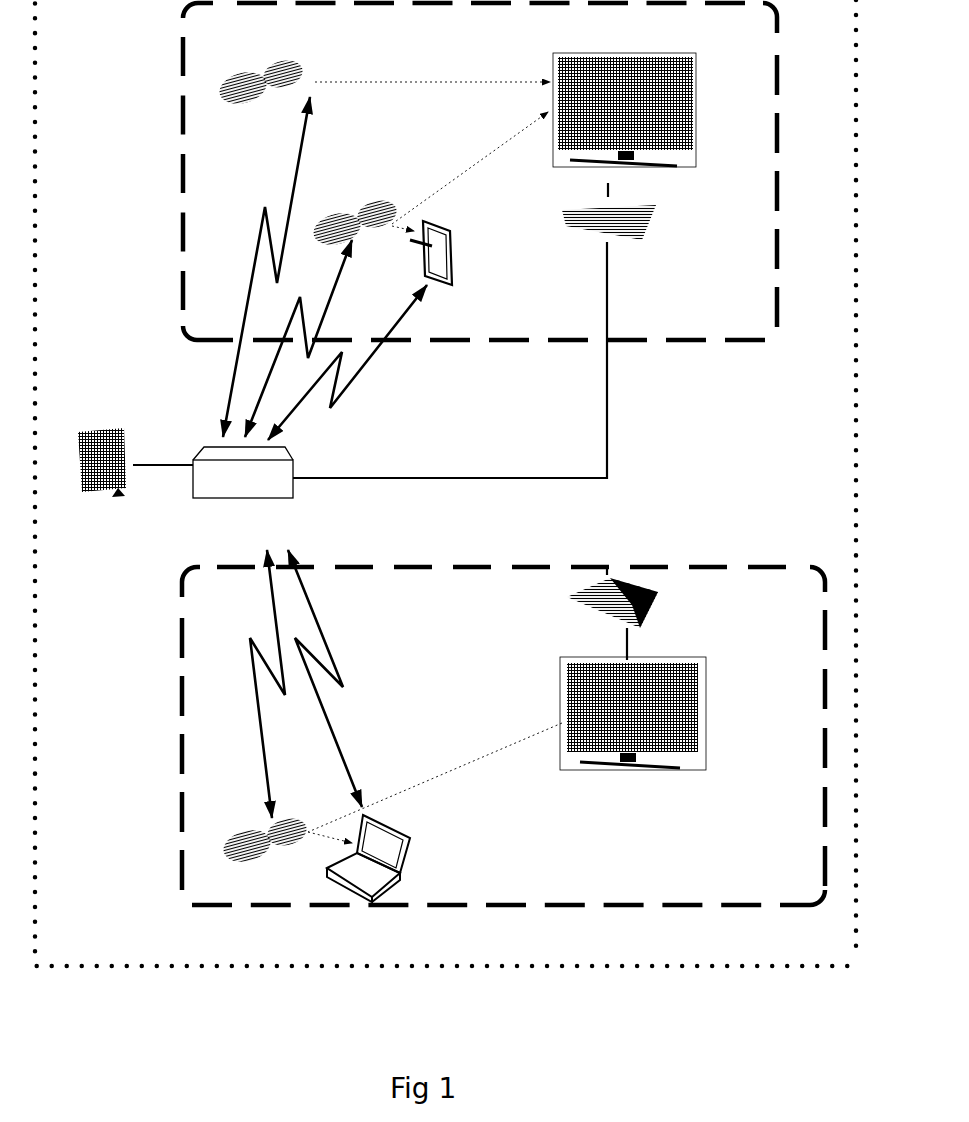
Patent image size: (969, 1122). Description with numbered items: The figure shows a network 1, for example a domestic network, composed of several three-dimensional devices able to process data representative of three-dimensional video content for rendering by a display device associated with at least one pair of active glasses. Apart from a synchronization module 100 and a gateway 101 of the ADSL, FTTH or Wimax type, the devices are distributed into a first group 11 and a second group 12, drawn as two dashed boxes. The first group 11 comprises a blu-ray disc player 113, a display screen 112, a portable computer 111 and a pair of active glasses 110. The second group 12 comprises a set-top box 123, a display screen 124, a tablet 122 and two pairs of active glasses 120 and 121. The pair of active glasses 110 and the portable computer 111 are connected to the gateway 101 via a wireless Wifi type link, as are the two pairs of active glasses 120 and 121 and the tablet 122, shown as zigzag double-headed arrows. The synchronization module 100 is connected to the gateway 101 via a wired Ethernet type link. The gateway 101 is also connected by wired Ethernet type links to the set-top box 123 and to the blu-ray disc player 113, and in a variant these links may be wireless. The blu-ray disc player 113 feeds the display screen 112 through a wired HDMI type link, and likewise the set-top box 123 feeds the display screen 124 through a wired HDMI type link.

The network 1 is at (643, 986).
The first group 11 is at (183, 703).
The second group 12 is at (183, 180).
The synchronization module 100 is at (110, 502).
The gateway 101 is at (293, 493).
The pair of active glasses 110 is at (245, 825).
The portable computer 111 is at (412, 843).
The display screen 112 is at (562, 663).
The 3D blu-ray disc player 113 is at (573, 598).
The pair of active glasses 120 is at (248, 103).
The pair of active glasses 121 is at (348, 200).
The 3D tablet 122 is at (455, 270).
The set-top box 123 is at (650, 230).
The display screen 124 is at (552, 53).